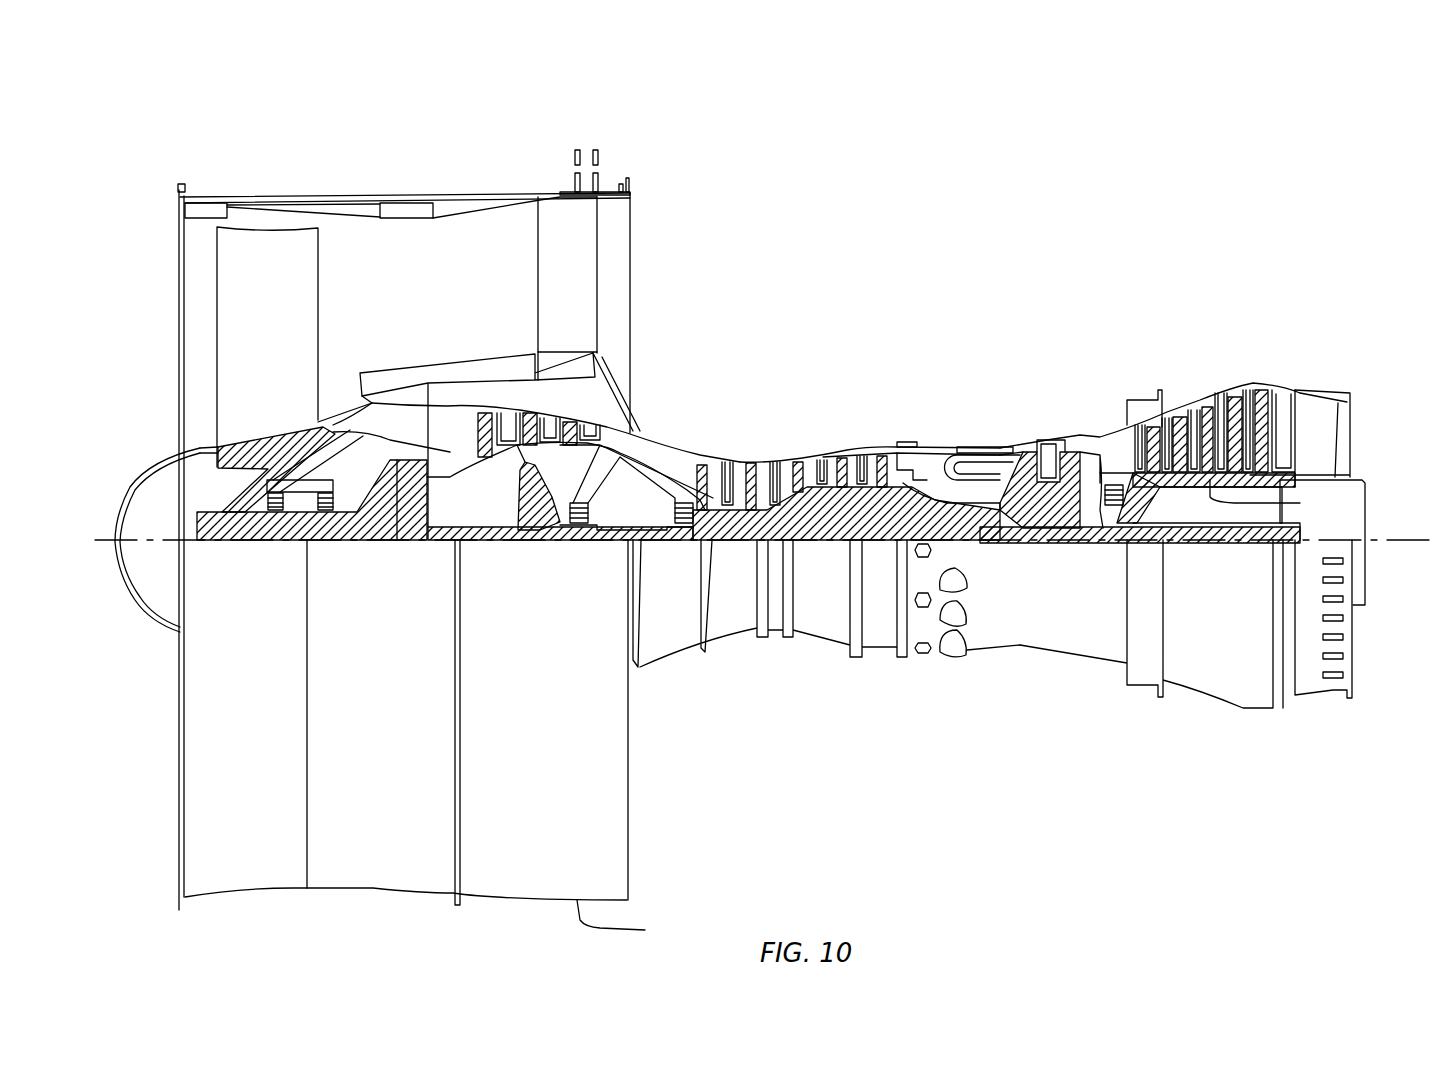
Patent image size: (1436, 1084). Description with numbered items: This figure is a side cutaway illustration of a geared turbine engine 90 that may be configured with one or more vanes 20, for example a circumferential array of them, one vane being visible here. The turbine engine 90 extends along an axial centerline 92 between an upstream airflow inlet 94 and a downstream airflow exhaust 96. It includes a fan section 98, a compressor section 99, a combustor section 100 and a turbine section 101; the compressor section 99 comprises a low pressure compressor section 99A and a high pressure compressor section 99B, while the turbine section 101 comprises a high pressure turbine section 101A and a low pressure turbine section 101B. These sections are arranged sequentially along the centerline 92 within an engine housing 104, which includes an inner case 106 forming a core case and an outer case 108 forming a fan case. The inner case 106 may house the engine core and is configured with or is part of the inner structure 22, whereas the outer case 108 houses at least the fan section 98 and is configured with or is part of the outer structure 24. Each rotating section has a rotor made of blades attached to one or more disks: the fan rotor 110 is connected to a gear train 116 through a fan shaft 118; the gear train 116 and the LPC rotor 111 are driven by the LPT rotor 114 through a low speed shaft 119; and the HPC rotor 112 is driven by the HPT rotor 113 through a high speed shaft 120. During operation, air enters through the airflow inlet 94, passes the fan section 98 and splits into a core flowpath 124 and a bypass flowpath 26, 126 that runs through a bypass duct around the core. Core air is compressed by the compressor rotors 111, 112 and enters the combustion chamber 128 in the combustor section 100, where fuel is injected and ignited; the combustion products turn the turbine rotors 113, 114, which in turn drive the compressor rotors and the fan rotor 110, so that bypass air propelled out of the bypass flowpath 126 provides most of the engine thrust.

The geared turbine engine 90 is at (146, 180).
The upstream airflow inlet 94 is at (179, 273).
The fan section 98 is at (406, 506).
The compressor section 99 is at (878, 95).
The low pressure compressor (LPC) section 99A is at (556, 355).
The high pressure compressor (HPC) section 99B is at (780, 459).
The combustor section 100 is at (958, 407).
The turbine section 101 is at (1307, 280).
The high pressure turbine (HPT) section 101A is at (1150, 460).
The low pressure turbine (LPT) section 101B is at (1166, 424).
The outer structure 24 is at (634, 186).
The vane 20 is at (602, 270).
The inner structure 22 is at (622, 380).
The bypass flowpath 26 is at (485, 306).
The bypass flowpath 126 is at (351, 347).
The downstream airflow exhaust 96 is at (1353, 430).
The axial centerline 92 is at (1420, 547).
The fan rotor 110 is at (210, 463).
The core flowpath 124 is at (660, 452).
The combustion chamber 128 is at (968, 470).
The LPT rotor 114 is at (1281, 501).
The fan shaft 118 is at (253, 543).
The gear train 116 is at (410, 543).
The LPC rotor 111 is at (525, 470).
The HPC rotor 112 is at (822, 500).
The high speed shaft 120 is at (975, 535).
The HPT rotor 113 is at (1047, 515).
The low speed shaft 119 is at (1223, 543).
The engine housing 104 is at (664, 680).
The inner case 106 is at (877, 650).
The outer case 108 is at (642, 926).